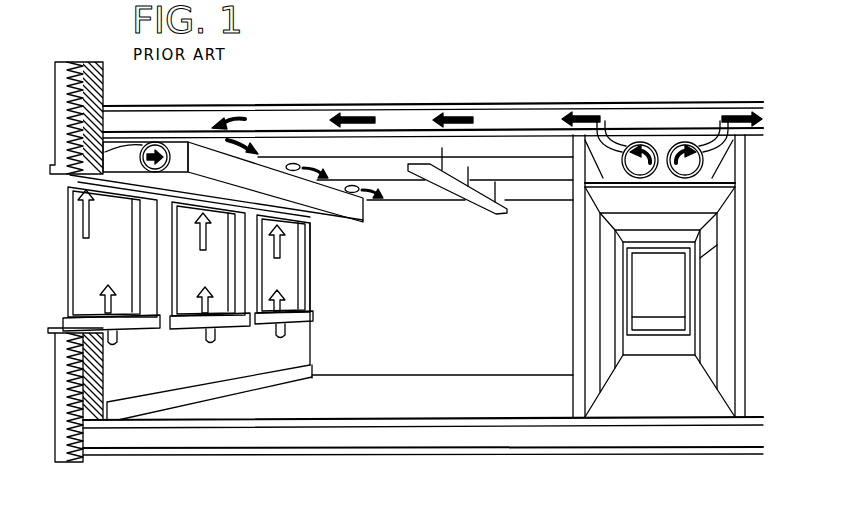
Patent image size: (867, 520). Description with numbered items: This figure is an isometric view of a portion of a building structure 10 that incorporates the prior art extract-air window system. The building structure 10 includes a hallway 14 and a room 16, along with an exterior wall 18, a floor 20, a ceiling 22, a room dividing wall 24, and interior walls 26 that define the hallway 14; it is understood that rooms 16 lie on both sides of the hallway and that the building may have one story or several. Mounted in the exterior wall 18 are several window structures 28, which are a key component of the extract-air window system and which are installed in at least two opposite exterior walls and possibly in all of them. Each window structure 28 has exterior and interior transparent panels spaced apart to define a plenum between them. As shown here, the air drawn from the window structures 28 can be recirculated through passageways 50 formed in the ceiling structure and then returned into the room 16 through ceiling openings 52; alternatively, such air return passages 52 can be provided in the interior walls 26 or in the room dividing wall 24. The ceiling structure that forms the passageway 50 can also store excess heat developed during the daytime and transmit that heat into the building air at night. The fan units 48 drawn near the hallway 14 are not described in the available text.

The building structure 10 is at (172, 470).
The hallway 14 is at (670, 295).
The room 16 is at (465, 363).
The exterior wall 18 is at (100, 381).
The floor 20 is at (292, 438).
The ceiling 22 is at (387, 115).
The room dividing wall 24 is at (451, 287).
The interior walls 26 is at (575, 265).
The window structures 28 is at (284, 274).
The fan 48 is at (640, 192).
The passageways 50 is at (498, 115).
The ceiling openings 52 is at (233, 118).